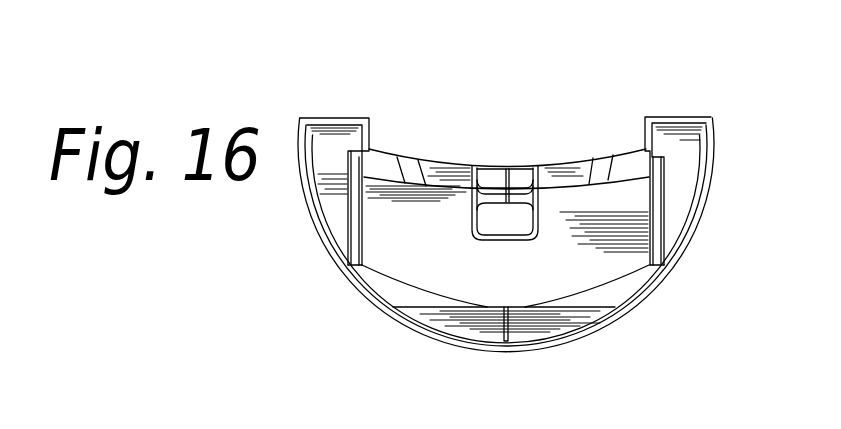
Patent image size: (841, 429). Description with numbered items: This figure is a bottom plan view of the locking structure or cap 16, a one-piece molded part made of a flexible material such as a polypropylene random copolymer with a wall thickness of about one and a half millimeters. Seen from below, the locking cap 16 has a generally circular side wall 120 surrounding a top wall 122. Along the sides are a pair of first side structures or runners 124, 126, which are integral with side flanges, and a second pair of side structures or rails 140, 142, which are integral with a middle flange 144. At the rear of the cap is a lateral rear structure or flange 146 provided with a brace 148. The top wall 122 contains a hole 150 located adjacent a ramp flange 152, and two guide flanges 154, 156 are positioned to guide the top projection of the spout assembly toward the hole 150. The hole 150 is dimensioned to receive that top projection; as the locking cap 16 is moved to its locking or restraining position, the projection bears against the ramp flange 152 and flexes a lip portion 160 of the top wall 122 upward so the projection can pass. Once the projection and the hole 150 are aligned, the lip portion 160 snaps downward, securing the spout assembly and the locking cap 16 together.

The locking cap 16 is at (548, 225).
The side wall 120 is at (355, 292).
The top wall 122 is at (635, 168).
The runner 124 is at (372, 118).
The runner 126 is at (645, 127).
The rail 140 is at (362, 227).
The rail 142 is at (652, 198).
The middle flange 144 is at (603, 263).
The lateral rear flange 146 is at (428, 312).
The brace 148 is at (503, 313).
The hole 150 is at (507, 220).
The ramp flange 152 is at (517, 163).
The guide flange 154 is at (470, 163).
The guide flange 156 is at (542, 163).
The lip portion 160 is at (527, 175).